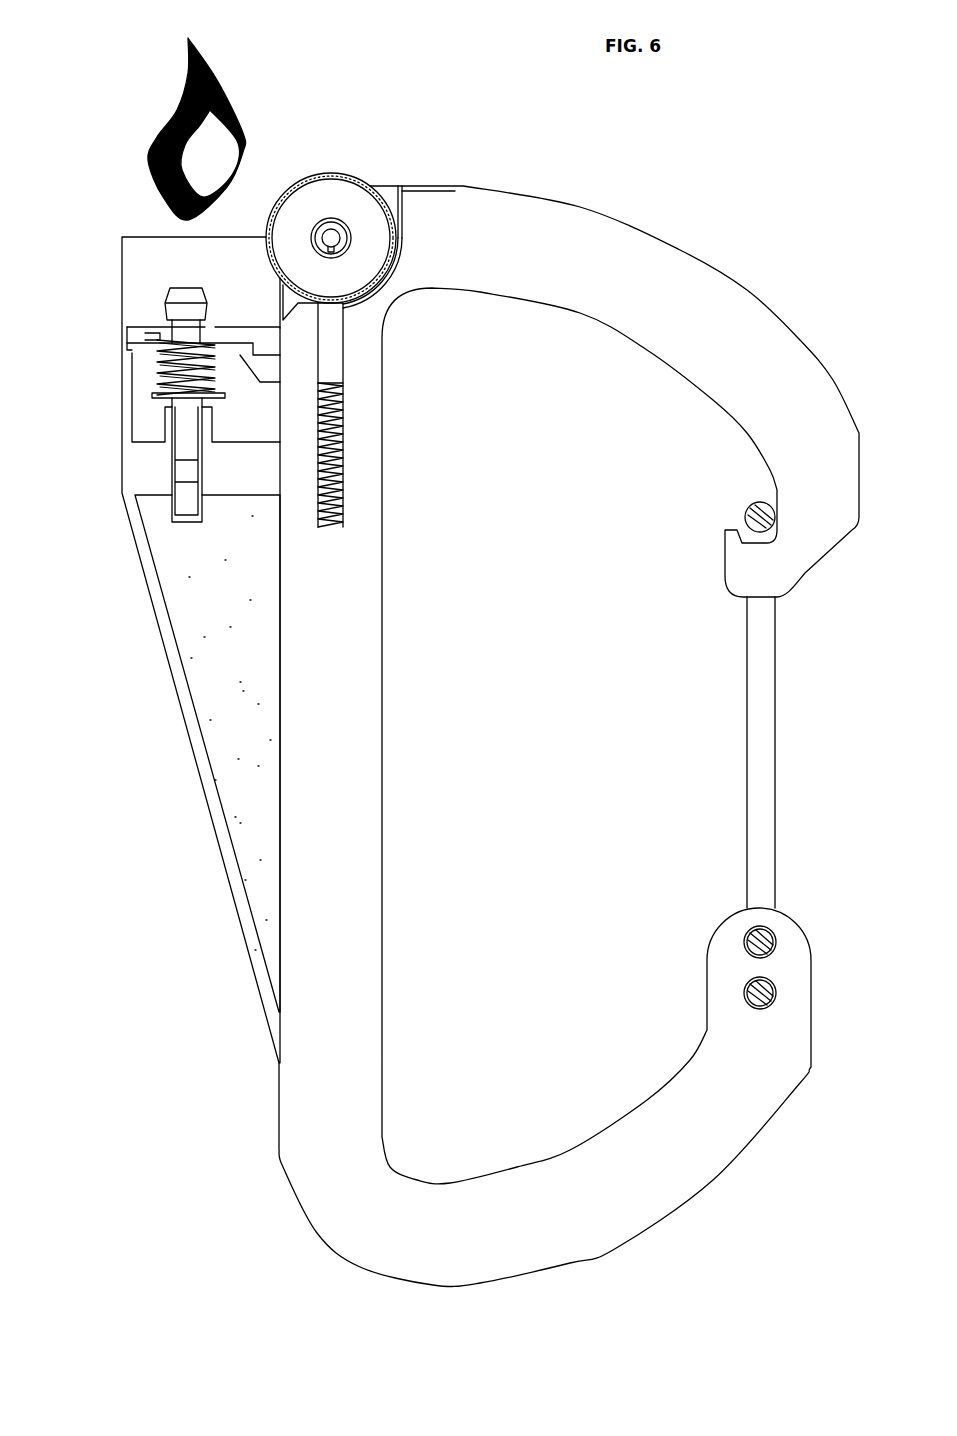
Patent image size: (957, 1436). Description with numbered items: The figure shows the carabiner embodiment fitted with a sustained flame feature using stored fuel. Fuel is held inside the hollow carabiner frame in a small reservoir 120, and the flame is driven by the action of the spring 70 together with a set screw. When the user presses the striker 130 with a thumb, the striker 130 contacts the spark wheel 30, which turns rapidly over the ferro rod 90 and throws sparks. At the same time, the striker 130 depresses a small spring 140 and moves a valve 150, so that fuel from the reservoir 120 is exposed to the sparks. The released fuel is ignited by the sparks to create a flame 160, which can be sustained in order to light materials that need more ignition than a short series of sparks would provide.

The spark wheel 30 is at (353, 160).
The spring 70 is at (362, 438).
The ferro rod 90 is at (362, 350).
The reservoir 120 is at (238, 645).
The striker 130 is at (135, 258).
The small spring 140 is at (153, 383).
The valve 150 is at (215, 305).
The flame 160 is at (245, 70).